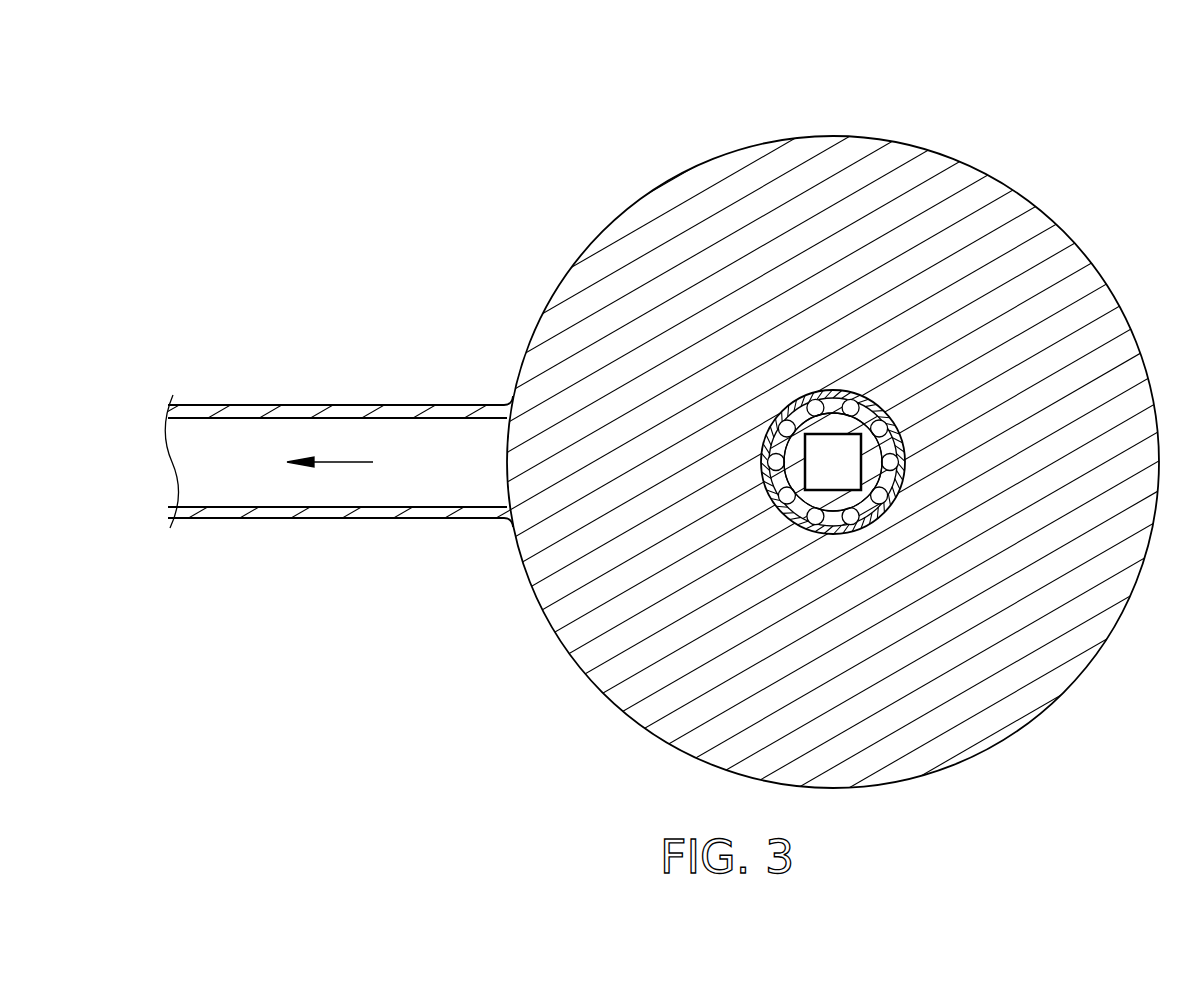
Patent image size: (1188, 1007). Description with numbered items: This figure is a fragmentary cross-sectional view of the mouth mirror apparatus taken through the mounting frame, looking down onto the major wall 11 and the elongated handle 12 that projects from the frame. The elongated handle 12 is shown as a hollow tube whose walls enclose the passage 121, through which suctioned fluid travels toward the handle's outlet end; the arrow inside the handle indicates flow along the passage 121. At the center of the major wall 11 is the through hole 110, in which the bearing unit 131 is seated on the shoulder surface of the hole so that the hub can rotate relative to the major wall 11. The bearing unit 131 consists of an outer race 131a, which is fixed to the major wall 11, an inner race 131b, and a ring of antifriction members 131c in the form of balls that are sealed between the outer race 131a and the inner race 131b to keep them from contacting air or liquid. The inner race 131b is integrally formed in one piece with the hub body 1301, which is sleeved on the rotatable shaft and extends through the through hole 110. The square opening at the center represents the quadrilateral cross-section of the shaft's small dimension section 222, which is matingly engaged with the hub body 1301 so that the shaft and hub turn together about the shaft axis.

The major wall 11 is at (1034, 232).
The elongated handle 12 is at (391, 405).
The passage 121 is at (405, 483).
The bearing unit 131 is at (933, 57).
The outer race 131a is at (800, 400).
The inner race 131b is at (816, 405).
The antifriction members 131c is at (850, 405).
The hub body 1301 is at (833, 490).
The small dimension section 222 is at (806, 493).
The through hole 110 is at (878, 515).